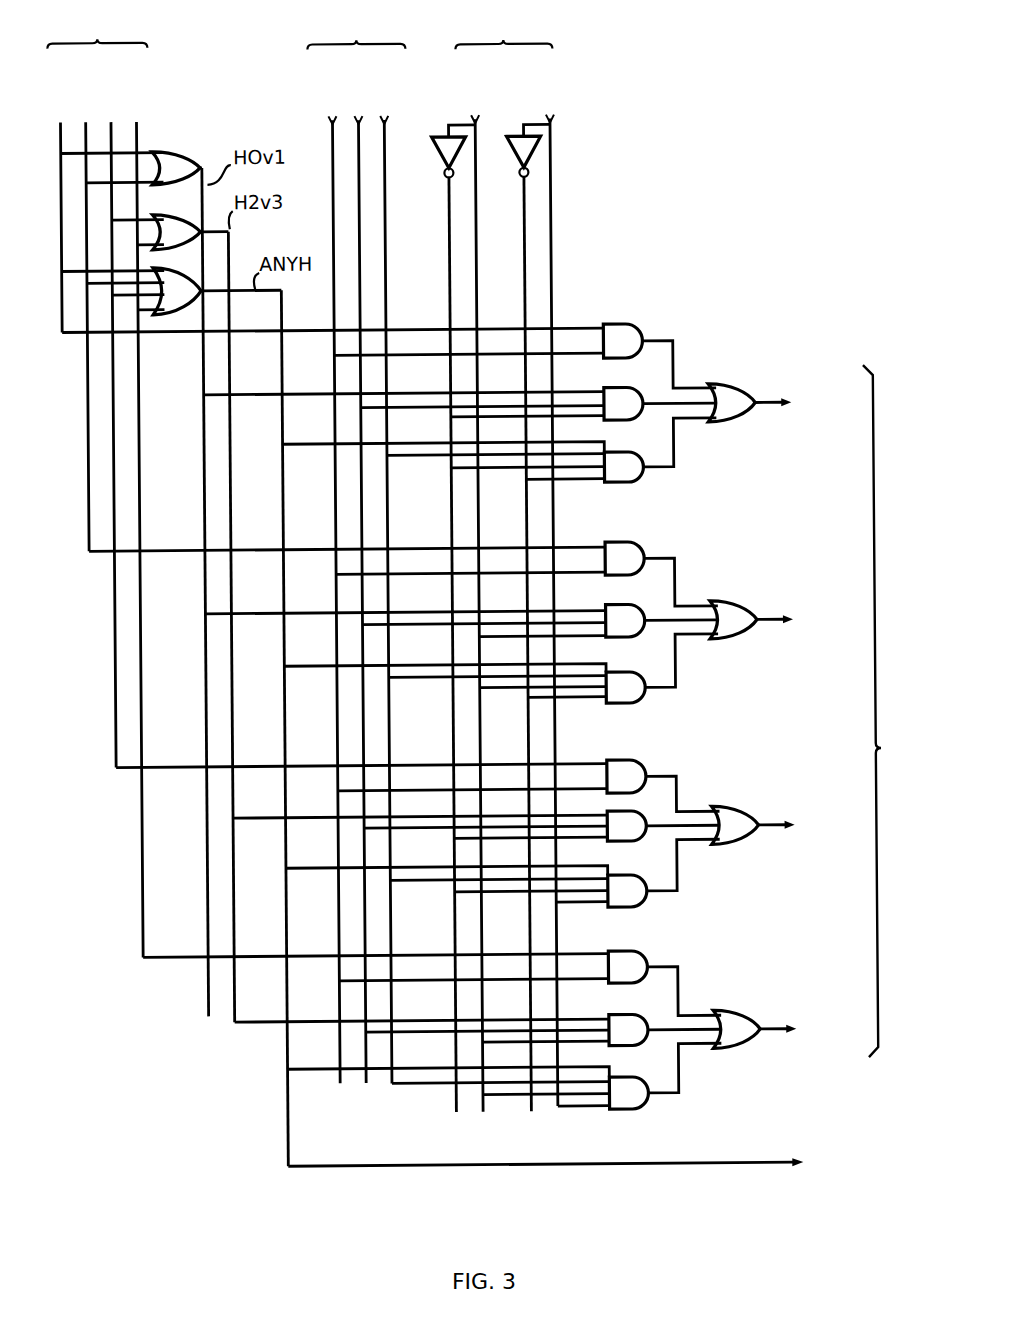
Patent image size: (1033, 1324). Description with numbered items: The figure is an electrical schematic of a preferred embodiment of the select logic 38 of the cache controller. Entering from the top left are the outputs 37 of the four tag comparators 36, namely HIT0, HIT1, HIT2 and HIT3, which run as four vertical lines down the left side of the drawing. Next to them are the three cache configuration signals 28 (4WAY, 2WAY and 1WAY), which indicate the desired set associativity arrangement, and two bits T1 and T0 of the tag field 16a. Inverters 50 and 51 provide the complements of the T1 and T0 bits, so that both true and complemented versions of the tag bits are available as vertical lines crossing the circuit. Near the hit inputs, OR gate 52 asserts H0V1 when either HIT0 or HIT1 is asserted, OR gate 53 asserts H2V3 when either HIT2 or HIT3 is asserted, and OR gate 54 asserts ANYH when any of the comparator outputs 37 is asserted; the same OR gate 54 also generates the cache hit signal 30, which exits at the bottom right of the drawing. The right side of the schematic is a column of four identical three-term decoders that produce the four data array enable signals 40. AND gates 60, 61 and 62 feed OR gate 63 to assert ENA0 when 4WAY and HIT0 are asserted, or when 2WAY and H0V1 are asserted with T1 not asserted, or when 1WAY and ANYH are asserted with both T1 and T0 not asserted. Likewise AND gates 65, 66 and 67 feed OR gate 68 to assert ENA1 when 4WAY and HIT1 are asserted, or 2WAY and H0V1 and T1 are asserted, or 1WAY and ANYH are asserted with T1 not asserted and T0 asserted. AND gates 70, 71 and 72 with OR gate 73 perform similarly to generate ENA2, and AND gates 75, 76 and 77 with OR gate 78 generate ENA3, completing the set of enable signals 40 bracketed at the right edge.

The cache hit signal 30 is at (744, 1170).
The tag comparators 36 is at (97, 61).
The tag comparator outputs 37 is at (50, 151).
The select logic 38 is at (702, 138).
The cache configuration signals 28 is at (365, 61).
The tag field 16a is at (510, 51).
The data array enable signals 40 is at (892, 711).
The inverter 50 is at (438, 165).
The inverter 51 is at (514, 165).
The OR gate 52 is at (175, 151).
The OR gate 53 is at (162, 218).
The OR gate 54 is at (162, 283).
The AND gate 60 is at (624, 333).
The AND gate 61 is at (623, 393).
The AND gate 62 is at (623, 459).
The OR gate 63 is at (727, 391).
The AND gate 65 is at (623, 549).
The AND gate 66 is at (622, 612).
The AND gate 67 is at (622, 679).
The OR gate 68 is at (730, 620).
The AND gate 70 is at (622, 768).
The AND gate 71 is at (620, 819).
The AND gate 72 is at (620, 883).
The OR gate 73 is at (728, 826).
The AND gate 75 is at (620, 958).
The AND gate 76 is at (619, 1022).
The AND gate 77 is at (618, 1084).
The OR gate 78 is at (727, 1026).